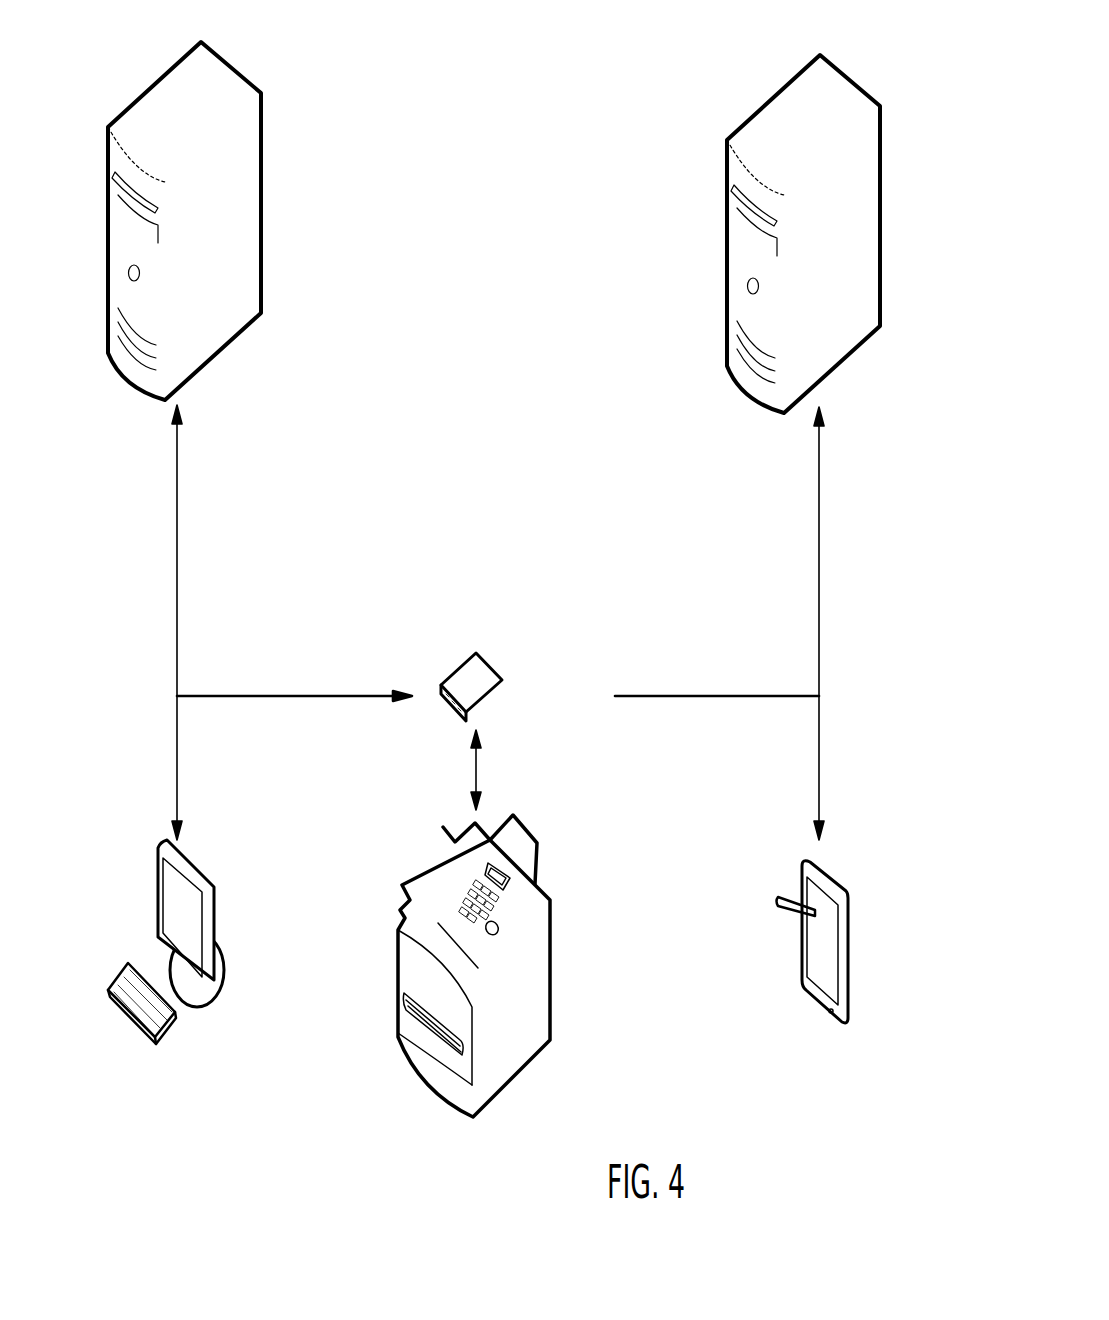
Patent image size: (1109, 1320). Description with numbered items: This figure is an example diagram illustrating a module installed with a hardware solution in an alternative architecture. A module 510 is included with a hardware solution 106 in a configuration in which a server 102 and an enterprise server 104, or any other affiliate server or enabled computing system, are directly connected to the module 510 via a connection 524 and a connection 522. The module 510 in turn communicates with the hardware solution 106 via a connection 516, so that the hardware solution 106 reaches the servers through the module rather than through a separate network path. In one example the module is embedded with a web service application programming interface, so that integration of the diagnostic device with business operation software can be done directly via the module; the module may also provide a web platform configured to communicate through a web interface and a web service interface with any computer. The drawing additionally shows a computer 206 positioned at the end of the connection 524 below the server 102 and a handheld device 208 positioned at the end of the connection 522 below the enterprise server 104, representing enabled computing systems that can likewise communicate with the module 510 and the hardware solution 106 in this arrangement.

The server 102 is at (261, 183).
The enterprise server 104 is at (880, 198).
The hardware solution 106 is at (550, 972).
The computer 206 is at (214, 902).
The tablet / mobile device 208 is at (848, 925).
The module 510 is at (502, 684).
The connection 516 is at (476, 765).
The connection 522 is at (819, 620).
The connection 524 is at (177, 630).